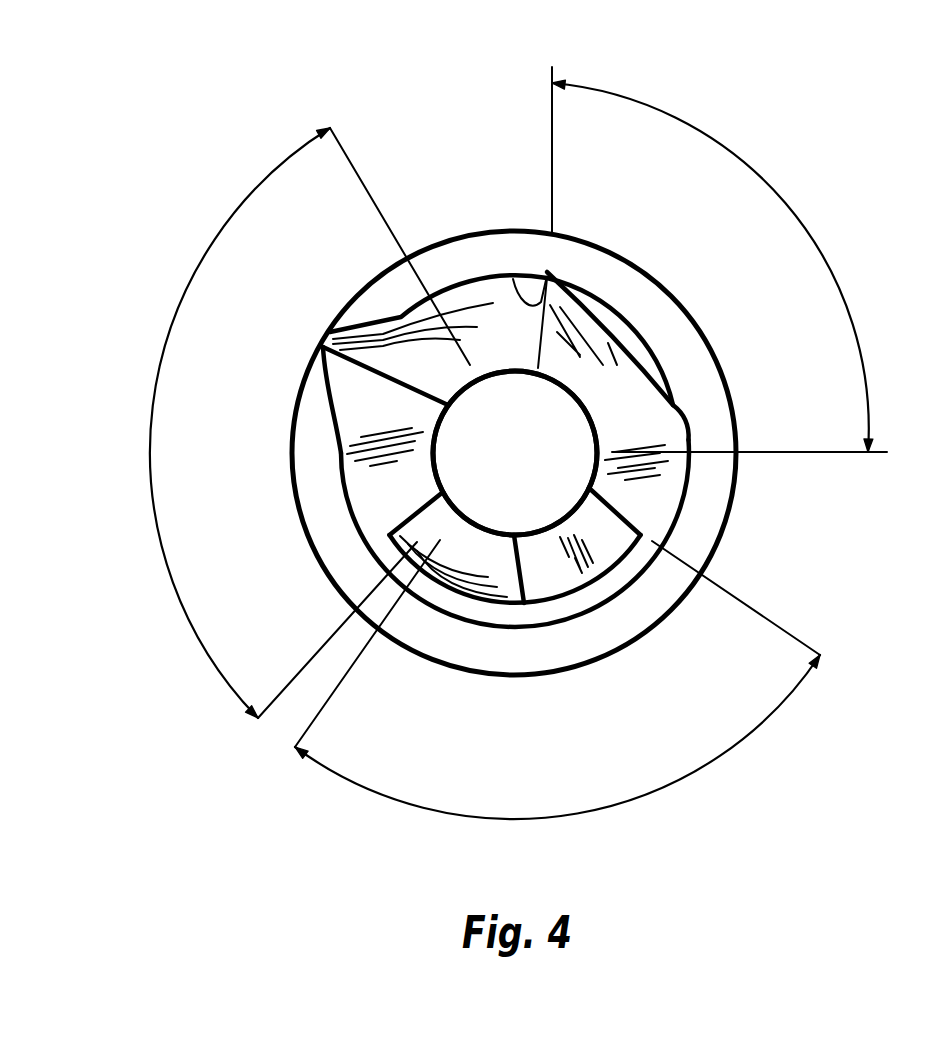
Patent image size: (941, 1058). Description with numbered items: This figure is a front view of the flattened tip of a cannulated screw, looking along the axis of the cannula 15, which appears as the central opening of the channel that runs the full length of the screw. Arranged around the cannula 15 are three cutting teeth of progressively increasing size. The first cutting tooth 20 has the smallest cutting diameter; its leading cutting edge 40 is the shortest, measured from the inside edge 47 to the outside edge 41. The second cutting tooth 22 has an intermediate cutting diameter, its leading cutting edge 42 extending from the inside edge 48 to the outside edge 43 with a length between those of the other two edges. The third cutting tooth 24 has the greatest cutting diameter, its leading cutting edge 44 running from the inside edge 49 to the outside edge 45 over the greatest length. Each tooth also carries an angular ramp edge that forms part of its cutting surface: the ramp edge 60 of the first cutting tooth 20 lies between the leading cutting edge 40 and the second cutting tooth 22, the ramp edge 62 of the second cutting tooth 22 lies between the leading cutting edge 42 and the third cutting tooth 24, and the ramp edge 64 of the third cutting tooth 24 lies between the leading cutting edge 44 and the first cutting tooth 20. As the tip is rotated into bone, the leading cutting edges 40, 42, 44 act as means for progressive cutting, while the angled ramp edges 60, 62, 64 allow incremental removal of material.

The cannula 15 is at (475, 367).
The first cutting tooth 20 is at (798, 218).
The second cutting tooth 22 is at (576, 814).
The third cutting tooth 24 is at (153, 492).
The leading cutting edge 40 is at (495, 370).
The outside edge 41 is at (547, 278).
The leading cutting edge 42 is at (620, 517).
The outside edge 43 is at (650, 540).
The leading cutting edge 44 is at (423, 520).
The outside edge 45 is at (400, 525).
The inside edge 47 is at (538, 372).
The inside edge 48 is at (583, 492).
The inside edge 49 is at (492, 392).
The ramp edge 60 is at (605, 383).
The ramp edge 62 is at (524, 580).
The ramp edge 64 is at (383, 376).